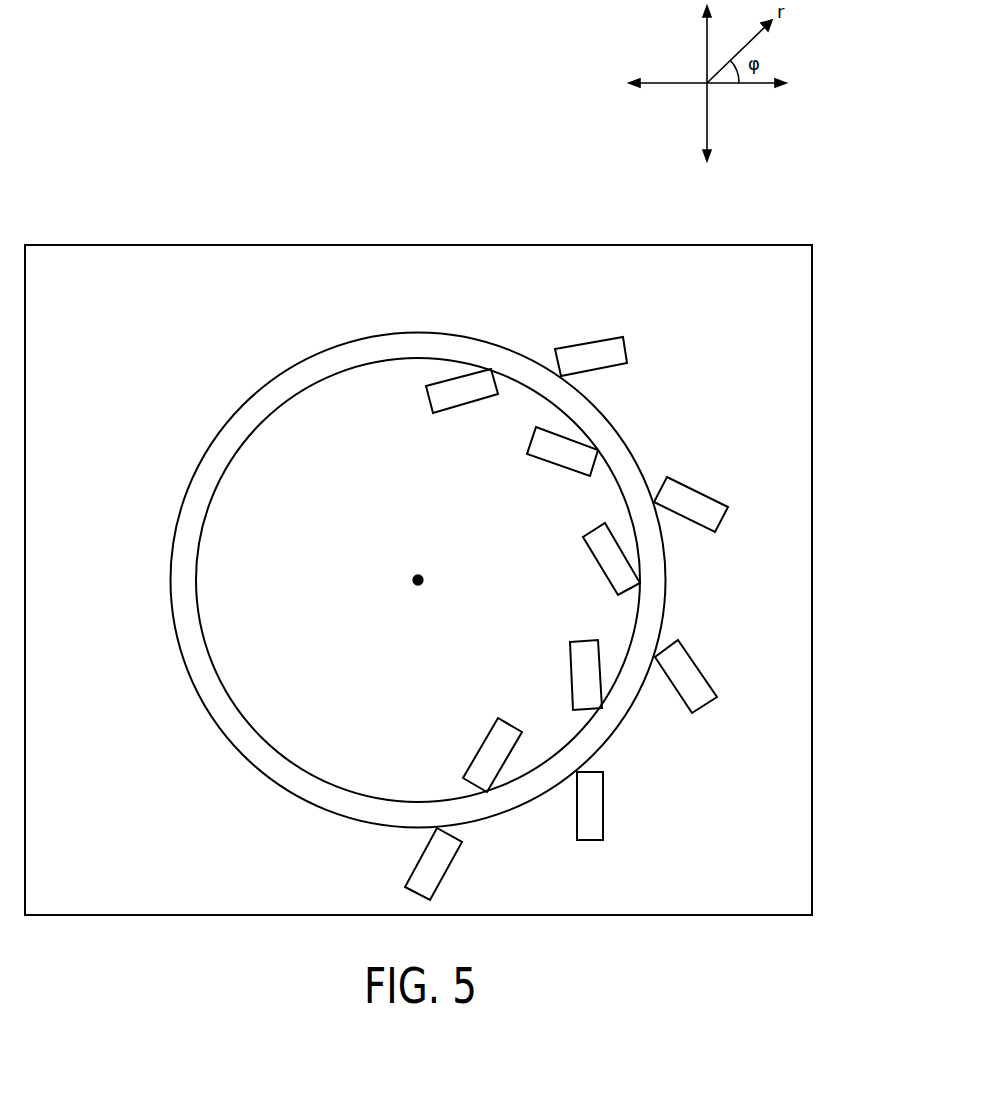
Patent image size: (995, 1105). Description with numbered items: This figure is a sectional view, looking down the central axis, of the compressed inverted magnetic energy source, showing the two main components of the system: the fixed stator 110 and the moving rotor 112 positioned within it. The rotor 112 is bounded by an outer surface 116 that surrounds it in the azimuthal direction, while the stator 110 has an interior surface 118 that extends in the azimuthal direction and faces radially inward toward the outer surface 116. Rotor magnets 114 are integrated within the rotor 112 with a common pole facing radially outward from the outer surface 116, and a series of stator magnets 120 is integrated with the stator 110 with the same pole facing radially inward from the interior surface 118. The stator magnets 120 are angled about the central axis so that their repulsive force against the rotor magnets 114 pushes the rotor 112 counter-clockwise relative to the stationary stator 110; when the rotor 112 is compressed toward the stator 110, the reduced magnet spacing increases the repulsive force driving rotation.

The stator 110 is at (785, 627).
The rotor 112 is at (242, 493).
The rotor magnets 114 is at (605, 553).
The outer surface 116 is at (242, 405).
The interior surface 118 is at (335, 375).
The stator magnets 120 is at (692, 502).